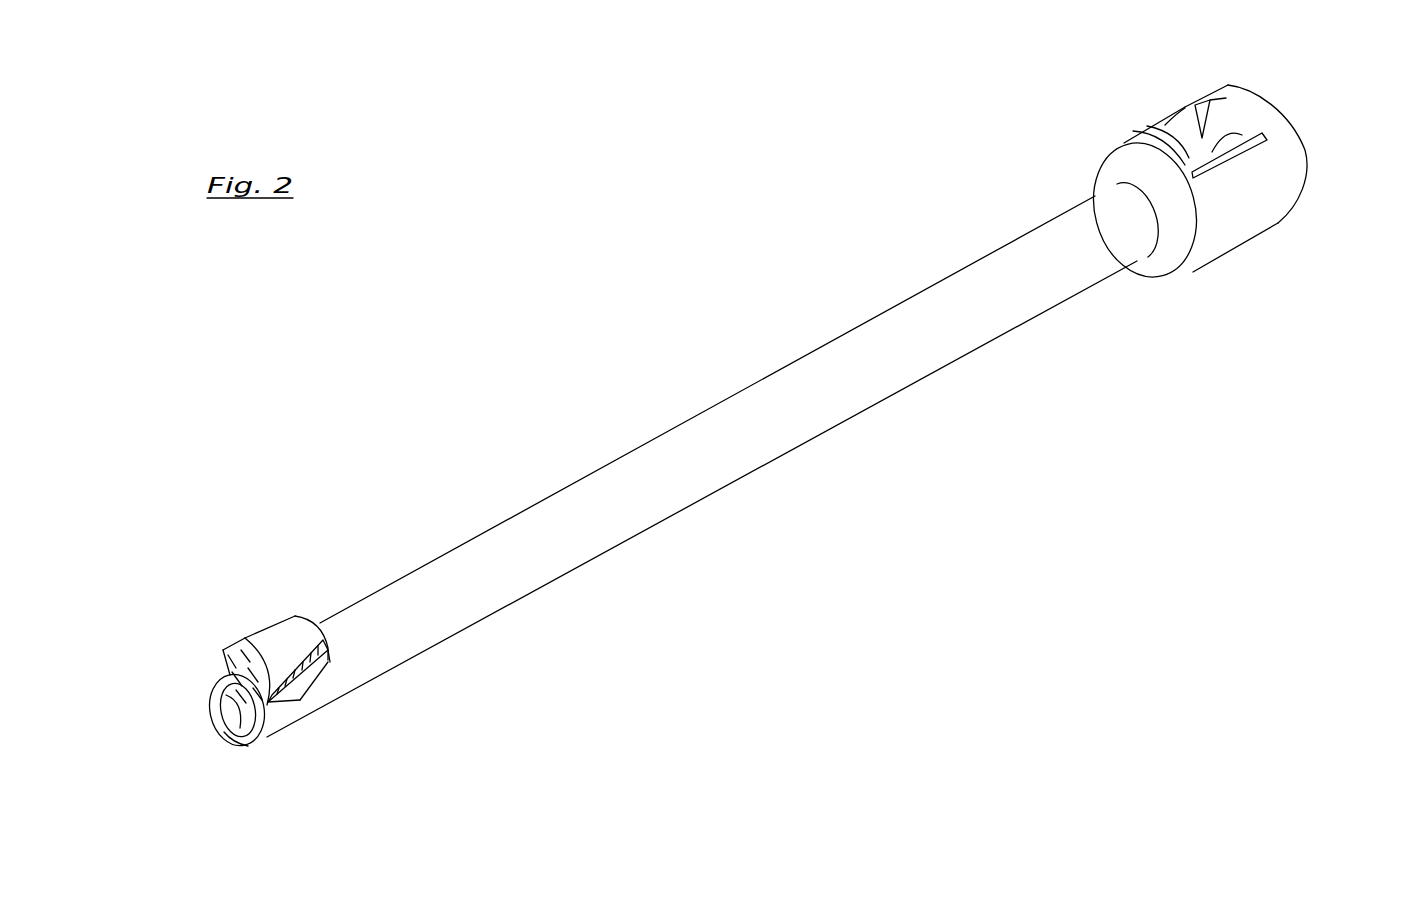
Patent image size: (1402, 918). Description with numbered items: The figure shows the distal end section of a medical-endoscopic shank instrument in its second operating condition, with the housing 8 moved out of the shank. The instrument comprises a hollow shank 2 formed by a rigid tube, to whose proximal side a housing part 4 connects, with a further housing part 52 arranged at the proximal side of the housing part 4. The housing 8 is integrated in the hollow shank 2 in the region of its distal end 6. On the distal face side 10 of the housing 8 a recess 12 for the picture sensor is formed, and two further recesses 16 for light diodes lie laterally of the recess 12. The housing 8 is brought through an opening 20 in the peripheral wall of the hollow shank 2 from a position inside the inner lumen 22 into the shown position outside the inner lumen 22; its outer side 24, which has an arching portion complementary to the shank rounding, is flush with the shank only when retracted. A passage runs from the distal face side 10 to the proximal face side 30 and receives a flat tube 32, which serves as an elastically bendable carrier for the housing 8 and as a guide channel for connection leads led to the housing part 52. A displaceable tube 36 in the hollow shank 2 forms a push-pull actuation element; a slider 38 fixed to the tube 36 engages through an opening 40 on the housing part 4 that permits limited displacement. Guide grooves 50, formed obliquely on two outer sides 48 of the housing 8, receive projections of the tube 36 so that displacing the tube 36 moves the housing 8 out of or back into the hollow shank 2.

The hollow shank 2 is at (757, 408).
The housing part 4 is at (1117, 172).
The distal end 6 is at (213, 692).
The housing 8 is at (273, 625).
The distal face side 10 is at (224, 654).
The recess 12 is at (238, 650).
The further recesses 16 is at (223, 653).
The opening 20 is at (325, 668).
The inner lumen 22 is at (240, 712).
The outer side 24 is at (302, 627).
The proximal face side 30 is at (327, 655).
The flat tube 32 is at (228, 740).
The tube 36 is at (217, 692).
The slider 38 is at (1183, 128).
The opening 40 is at (1226, 123).
The outer sides 48 is at (326, 662).
The guide groove 50 is at (310, 674).
The housing part 52 is at (1293, 159).